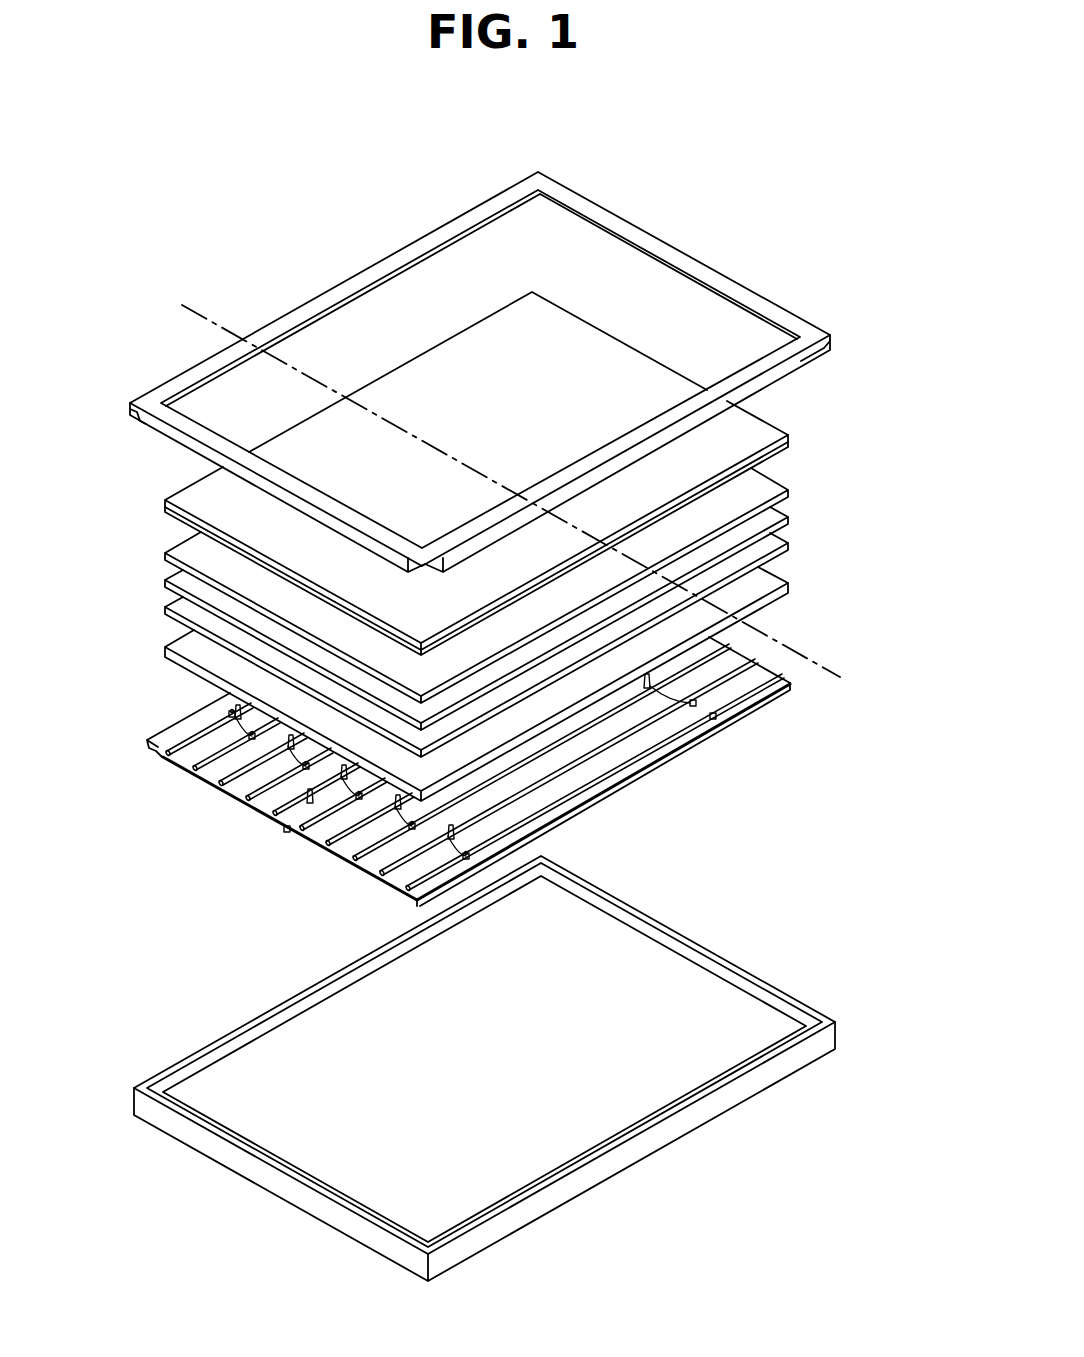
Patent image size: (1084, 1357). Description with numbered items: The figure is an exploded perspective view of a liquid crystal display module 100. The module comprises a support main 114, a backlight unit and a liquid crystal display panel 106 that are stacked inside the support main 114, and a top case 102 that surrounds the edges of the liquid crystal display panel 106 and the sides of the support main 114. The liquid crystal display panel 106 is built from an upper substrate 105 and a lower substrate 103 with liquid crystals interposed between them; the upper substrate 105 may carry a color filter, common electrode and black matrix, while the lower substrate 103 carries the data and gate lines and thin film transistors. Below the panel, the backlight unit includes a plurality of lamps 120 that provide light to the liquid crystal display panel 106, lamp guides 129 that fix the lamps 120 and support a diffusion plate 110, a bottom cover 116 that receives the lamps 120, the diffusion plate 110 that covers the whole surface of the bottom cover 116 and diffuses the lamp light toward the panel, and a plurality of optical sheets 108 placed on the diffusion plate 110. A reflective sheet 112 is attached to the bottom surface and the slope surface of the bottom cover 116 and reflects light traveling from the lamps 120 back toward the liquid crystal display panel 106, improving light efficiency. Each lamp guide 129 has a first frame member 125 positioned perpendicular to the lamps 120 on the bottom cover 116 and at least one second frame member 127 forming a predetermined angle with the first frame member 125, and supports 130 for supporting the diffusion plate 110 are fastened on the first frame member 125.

The liquid crystal display module 100 is at (187, 172).
The top case 102 is at (768, 308).
The lower substrate 103 is at (788, 443).
The upper substrate 105 is at (787, 434).
The liquid crystal display panel 106 is at (551, 528).
The optical sheets 108 is at (804, 490).
The diffusion plate 110 is at (792, 583).
The reflective sheet 112 is at (163, 768).
The support main 114 is at (796, 1000).
The bottom cover 116 is at (687, 742).
The lamps 120 is at (408, 893).
The first frame member 125 is at (245, 792).
The second frame member 127 is at (287, 829).
The lamp guides 129 is at (434, 788).
The supports 130 is at (340, 863).